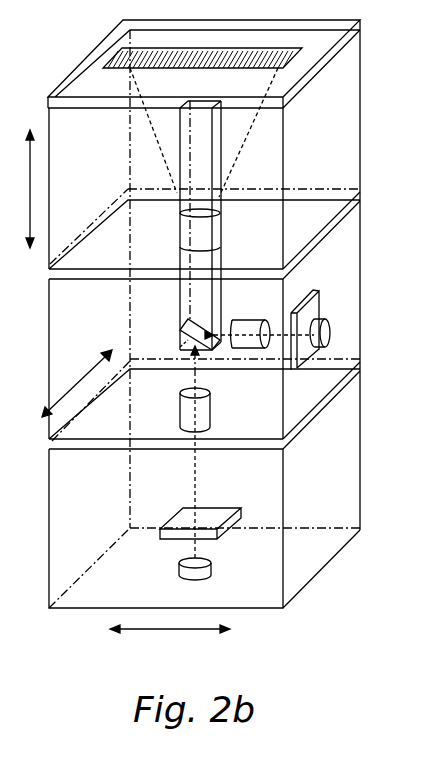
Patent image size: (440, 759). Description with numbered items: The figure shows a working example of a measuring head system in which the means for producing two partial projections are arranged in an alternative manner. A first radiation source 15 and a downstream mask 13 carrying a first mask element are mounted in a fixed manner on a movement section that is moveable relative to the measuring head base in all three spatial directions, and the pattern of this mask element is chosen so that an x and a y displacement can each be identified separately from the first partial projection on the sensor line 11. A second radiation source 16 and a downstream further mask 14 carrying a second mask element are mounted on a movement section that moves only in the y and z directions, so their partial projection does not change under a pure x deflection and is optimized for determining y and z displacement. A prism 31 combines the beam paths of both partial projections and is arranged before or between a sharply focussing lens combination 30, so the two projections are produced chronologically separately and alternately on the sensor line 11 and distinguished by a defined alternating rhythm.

The sensor line 11 is at (122, 60).
The mask 13 is at (218, 515).
The further mask 14 is at (313, 303).
The first radiation source 15 is at (201, 573).
The second radiation source 16 is at (325, 337).
The lens combination 30 is at (215, 235).
The prism 31 is at (206, 332).